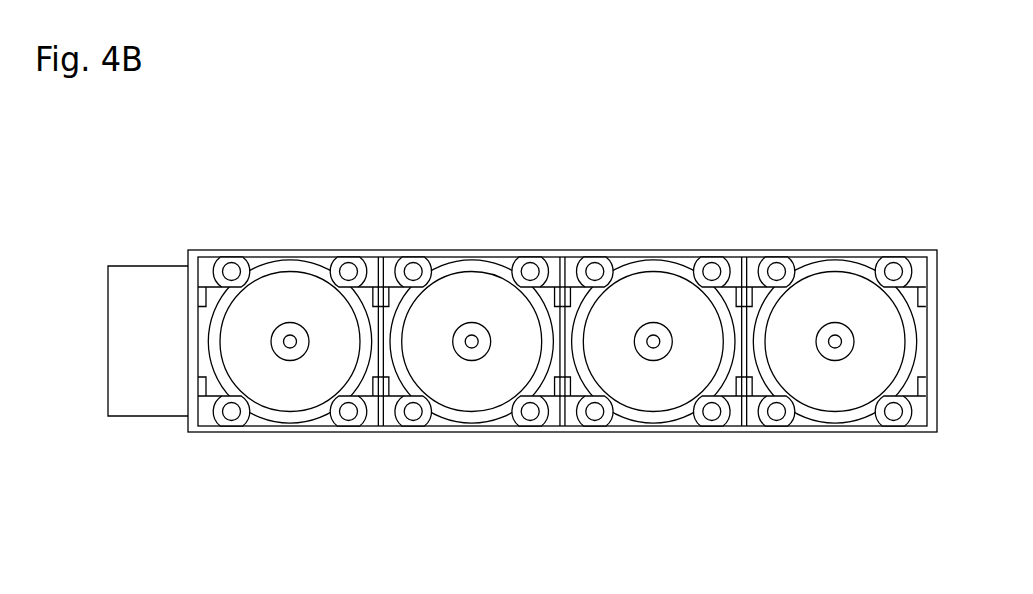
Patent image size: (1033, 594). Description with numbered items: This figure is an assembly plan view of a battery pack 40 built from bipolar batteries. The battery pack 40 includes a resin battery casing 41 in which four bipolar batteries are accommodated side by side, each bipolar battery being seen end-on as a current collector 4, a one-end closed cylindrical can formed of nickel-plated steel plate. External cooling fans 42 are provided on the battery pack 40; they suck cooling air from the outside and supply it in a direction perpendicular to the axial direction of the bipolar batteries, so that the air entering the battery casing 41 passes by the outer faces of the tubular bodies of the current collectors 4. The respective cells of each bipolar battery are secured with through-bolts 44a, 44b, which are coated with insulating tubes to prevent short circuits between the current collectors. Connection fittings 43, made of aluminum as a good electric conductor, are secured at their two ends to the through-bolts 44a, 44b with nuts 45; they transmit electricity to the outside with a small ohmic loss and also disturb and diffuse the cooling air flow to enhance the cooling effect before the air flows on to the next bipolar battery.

The battery pack 40 is at (791, 205).
The battery casing 41 is at (473, 252).
The cooling fan 42 is at (148, 277).
The connection fitting 43 is at (207, 263).
The through-bolt 44a is at (232, 264).
The through-bolt 44b is at (350, 416).
The nut 45 is at (346, 258).
The current collector 4 is at (283, 295).